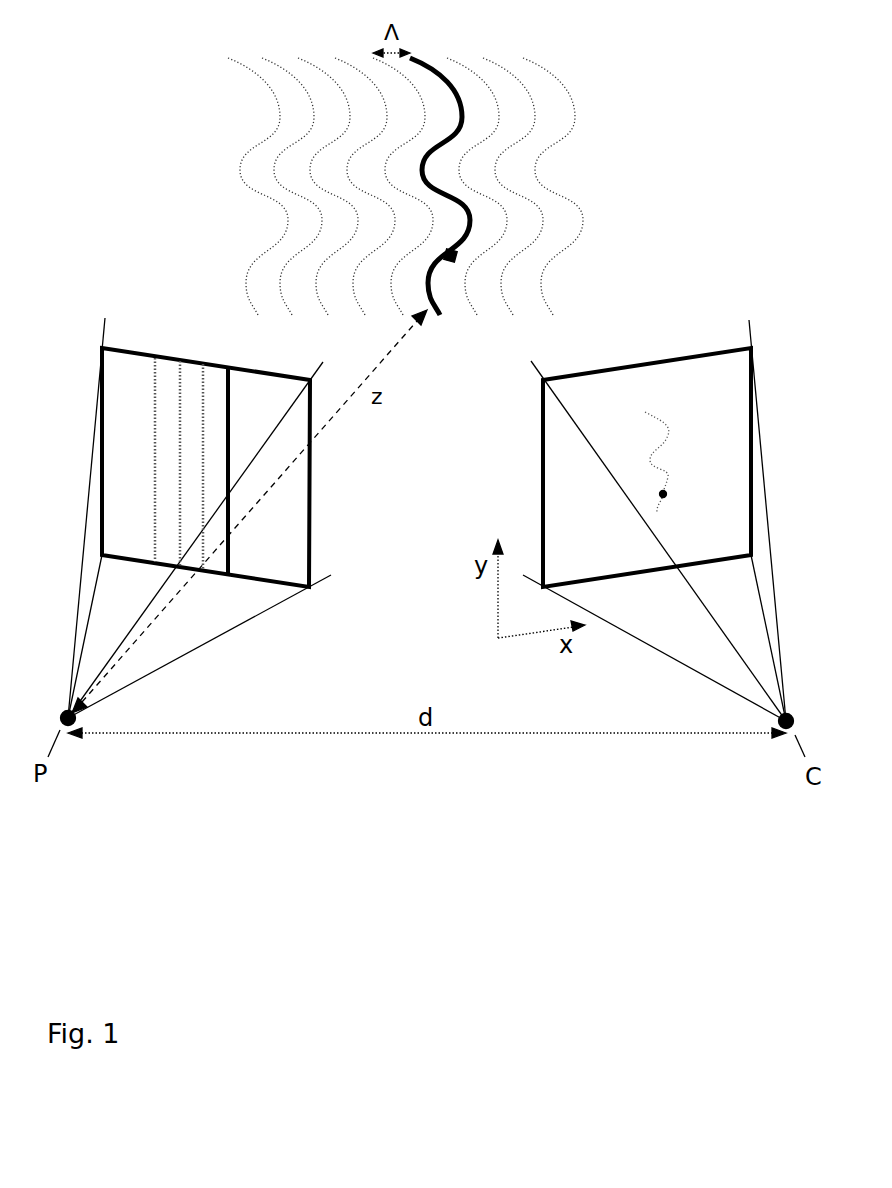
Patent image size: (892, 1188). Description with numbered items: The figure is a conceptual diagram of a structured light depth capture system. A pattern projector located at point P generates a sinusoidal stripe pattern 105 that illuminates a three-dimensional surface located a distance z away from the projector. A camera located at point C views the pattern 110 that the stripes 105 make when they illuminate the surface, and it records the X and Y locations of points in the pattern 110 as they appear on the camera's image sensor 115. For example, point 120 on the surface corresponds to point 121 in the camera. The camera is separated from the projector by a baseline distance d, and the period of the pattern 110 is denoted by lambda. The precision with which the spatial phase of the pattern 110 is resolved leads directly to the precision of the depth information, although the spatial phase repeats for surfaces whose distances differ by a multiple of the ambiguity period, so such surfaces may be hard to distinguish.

The sinusoidal stripe pattern 105 is at (164, 406).
The pattern 110 is at (330, 120).
The image sensor 115 is at (722, 408).
The point on the surface 120 is at (457, 265).
The point in the camera 121 is at (670, 500).